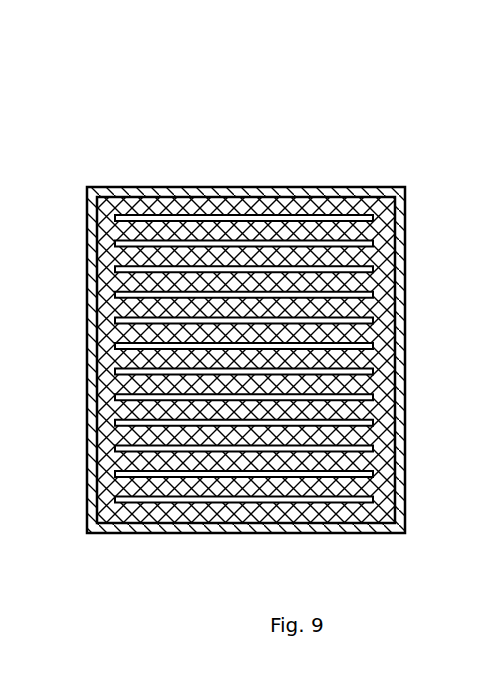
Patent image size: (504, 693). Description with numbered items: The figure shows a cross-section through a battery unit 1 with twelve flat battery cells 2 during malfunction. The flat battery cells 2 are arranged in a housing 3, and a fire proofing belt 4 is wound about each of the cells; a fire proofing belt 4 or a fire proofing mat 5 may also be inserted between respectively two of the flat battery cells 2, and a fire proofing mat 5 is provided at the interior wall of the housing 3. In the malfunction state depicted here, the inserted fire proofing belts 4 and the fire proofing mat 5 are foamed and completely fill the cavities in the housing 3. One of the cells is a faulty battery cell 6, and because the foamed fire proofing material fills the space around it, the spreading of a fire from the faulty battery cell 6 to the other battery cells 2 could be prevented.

The battery unit 1 is at (383, 174).
The flat battery cells 2 is at (400, 244).
The housing 3 is at (184, 192).
The fire proofing belt 4 is at (88, 243).
The fire proofing mat 5 is at (122, 197).
The faulty battery cell 6 is at (400, 456).